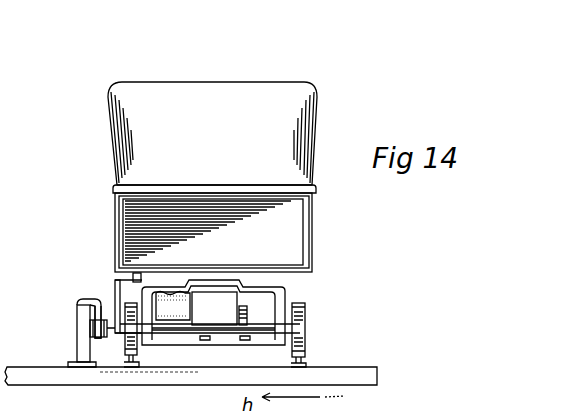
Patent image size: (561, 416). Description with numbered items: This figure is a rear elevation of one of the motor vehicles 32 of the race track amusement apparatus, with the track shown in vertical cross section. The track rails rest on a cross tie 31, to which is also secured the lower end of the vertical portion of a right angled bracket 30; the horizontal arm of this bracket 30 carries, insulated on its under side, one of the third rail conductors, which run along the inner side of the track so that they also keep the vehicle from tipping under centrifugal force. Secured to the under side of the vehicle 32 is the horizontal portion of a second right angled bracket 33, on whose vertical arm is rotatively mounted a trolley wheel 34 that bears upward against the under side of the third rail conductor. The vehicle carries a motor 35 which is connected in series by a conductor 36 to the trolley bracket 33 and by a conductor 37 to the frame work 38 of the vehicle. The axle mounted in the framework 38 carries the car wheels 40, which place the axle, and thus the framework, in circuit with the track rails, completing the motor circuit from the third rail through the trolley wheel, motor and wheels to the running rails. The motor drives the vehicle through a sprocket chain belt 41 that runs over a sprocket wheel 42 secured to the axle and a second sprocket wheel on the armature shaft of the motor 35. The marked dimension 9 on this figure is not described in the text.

The display panel 9 is at (257, 392).
The right angled bracket 30 is at (77, 351).
The cross tie 31 is at (22, 373).
The motor vehicle 32 is at (212, 137).
The right angled bracket 33 is at (132, 277).
The trolley wheel 34 is at (92, 330).
The motor 35 is at (214, 308).
The conductor 36 is at (173, 306).
The conductor 37 is at (154, 337).
The frame work 38 is at (287, 290).
The car wheels 40 is at (307, 313).
The sprocket chain belt 41 is at (244, 317).
The sprocket wheel 42 is at (95, 313).